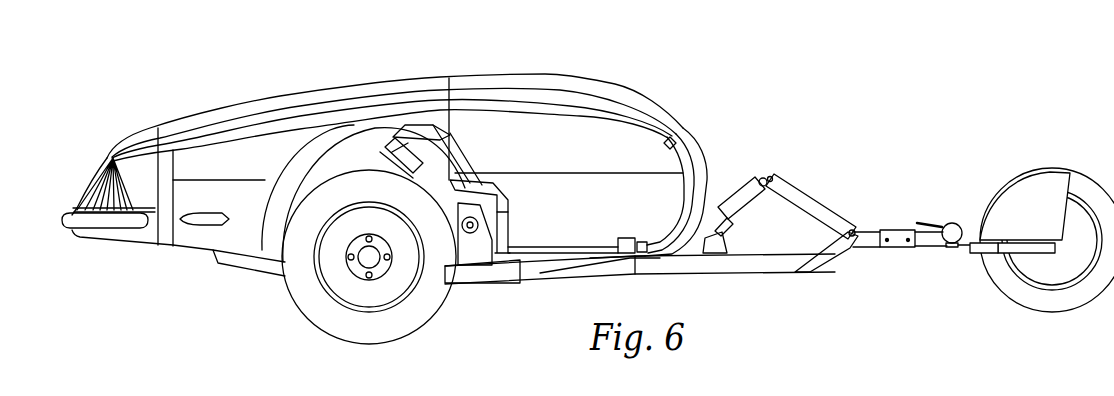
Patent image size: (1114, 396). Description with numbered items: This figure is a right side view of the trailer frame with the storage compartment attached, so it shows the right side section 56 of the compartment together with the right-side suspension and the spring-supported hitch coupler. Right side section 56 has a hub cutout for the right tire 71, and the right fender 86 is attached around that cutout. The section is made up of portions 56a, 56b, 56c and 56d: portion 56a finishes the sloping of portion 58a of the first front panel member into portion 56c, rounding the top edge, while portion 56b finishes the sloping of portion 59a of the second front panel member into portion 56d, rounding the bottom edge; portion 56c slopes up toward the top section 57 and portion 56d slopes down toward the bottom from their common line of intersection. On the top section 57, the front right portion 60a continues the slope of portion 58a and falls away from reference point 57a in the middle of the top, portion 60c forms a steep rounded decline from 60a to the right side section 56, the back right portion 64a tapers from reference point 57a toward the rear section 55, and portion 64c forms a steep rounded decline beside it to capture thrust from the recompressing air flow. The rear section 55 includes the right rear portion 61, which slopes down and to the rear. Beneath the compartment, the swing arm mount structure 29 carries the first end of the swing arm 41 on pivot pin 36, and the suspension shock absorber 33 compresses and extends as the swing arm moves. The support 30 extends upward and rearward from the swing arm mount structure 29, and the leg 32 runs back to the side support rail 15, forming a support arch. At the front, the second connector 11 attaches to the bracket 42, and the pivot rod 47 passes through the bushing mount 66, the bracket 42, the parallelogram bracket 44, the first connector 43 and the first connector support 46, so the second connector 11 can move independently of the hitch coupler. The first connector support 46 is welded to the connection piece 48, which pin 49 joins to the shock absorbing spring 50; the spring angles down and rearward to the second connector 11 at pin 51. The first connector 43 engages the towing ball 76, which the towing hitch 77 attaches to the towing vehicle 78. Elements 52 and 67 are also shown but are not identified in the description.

The second connector 11 is at (760, 270).
The side support rail 15 is at (255, 267).
The swing arm mount structure 29 is at (480, 260).
The support 30 is at (485, 217).
The leg 32 is at (393, 140).
The suspension shock absorber 33 is at (412, 168).
The pivot pin 36 is at (483, 195).
The swing arm 41 is at (447, 228).
The bracket 42 is at (823, 262).
The first connector 43 is at (895, 230).
The parallelogram bracket 44 is at (860, 243).
The first connector support 46 is at (812, 205).
The pivot rod 47 is at (852, 229).
The connection piece 48 is at (770, 177).
The pin 49 is at (763, 180).
The shock absorbing spring 50 is at (745, 213).
The pin 51 is at (715, 240).
The lower shock bracket 52 is at (727, 243).
The rear section 55 is at (94, 176).
The right side section 56 is at (537, 233).
The portion 56a is at (685, 140).
The portion 56b is at (675, 220).
The portion 56c is at (571, 160).
The portion 56d is at (571, 216).
The top section 57 is at (492, 76).
The reference point 57a is at (443, 95).
The portion 58a is at (705, 150).
The portion 59a is at (690, 215).
The front right portion 60a is at (625, 95).
The portion 60c is at (533, 105).
The right rear portion 61 is at (103, 157).
The back right portion 64a is at (276, 96).
The portion 64c is at (347, 97).
The bushing mount 66 is at (853, 240).
The frame bracket 67 is at (625, 272).
The right tire 71 is at (281, 304).
The towing ball 76 is at (952, 253).
The towing hitch 77 is at (985, 255).
The towing vehicle 78 is at (1023, 172).
The right fender 86 is at (262, 202).